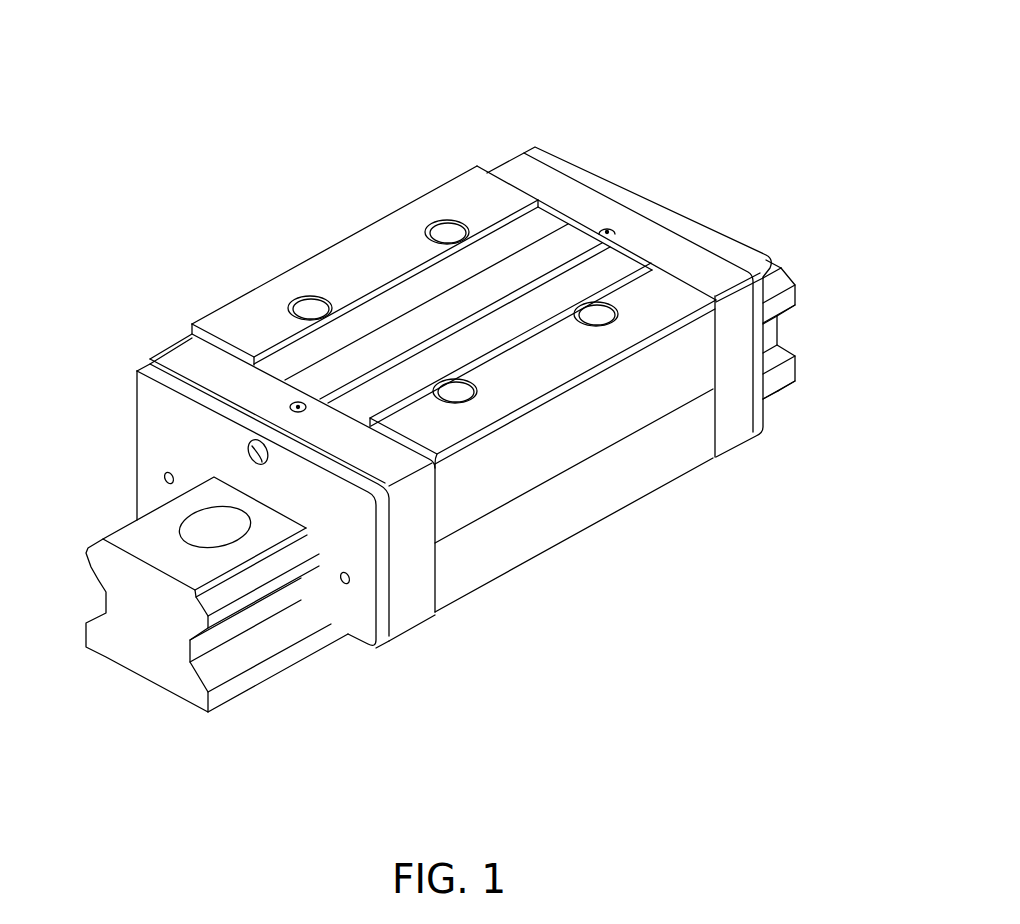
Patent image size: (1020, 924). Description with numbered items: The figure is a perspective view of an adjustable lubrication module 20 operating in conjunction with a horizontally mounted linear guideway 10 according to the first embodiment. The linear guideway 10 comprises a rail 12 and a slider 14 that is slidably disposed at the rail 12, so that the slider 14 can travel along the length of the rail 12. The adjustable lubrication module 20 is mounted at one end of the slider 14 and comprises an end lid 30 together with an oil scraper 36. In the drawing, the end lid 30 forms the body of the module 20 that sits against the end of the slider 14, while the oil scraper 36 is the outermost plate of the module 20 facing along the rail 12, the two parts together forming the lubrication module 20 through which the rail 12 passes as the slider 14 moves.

The linear guideway 10 is at (639, 125).
The rail 12 is at (152, 653).
The slider 14 is at (387, 245).
The adjustable lubrication module 20 is at (53, 254).
The end lid 30 is at (190, 362).
The oil scraper 36 is at (162, 405).